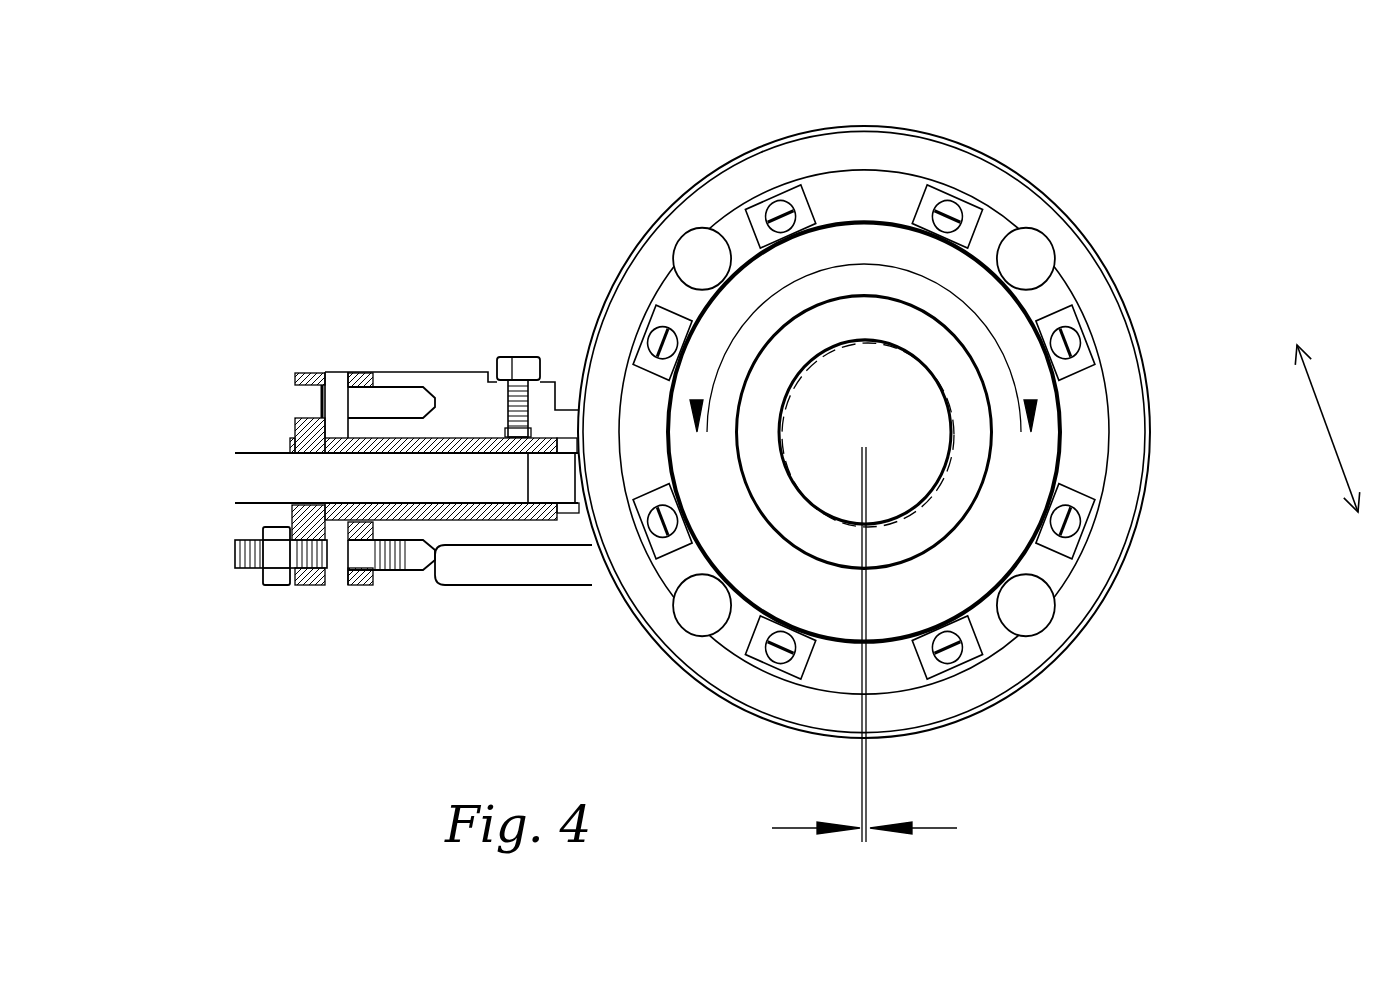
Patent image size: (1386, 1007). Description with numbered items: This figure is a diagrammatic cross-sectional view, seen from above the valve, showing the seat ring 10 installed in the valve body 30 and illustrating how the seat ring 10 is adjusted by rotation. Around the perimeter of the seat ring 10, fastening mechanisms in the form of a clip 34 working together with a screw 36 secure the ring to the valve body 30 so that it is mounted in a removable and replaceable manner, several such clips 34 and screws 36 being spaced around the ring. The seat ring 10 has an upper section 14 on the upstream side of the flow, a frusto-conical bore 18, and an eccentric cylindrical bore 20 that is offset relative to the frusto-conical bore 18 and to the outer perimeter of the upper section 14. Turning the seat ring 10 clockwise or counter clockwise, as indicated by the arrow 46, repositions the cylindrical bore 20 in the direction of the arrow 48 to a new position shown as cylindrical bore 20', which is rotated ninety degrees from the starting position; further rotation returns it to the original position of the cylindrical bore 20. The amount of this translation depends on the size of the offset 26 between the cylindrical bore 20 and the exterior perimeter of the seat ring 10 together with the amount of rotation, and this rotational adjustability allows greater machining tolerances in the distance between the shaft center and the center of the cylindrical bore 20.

The seat ring 10 is at (690, 452).
The upper section 14 is at (846, 550).
The frusto-conical bore 18 is at (800, 525).
The cylindrical bore 20 is at (961, 335).
The cylindrical bore (offset position) 20' is at (848, 311).
The offset 26 is at (940, 828).
The valve body 30 is at (707, 197).
The clip 34 is at (1067, 343).
The screw 36 is at (1070, 320).
The arrow 46 is at (872, 255).
The arrow 48 is at (1327, 430).